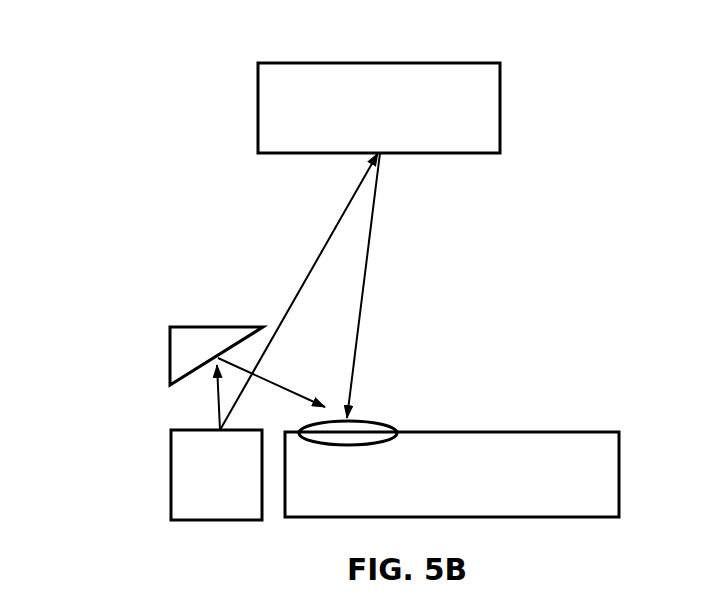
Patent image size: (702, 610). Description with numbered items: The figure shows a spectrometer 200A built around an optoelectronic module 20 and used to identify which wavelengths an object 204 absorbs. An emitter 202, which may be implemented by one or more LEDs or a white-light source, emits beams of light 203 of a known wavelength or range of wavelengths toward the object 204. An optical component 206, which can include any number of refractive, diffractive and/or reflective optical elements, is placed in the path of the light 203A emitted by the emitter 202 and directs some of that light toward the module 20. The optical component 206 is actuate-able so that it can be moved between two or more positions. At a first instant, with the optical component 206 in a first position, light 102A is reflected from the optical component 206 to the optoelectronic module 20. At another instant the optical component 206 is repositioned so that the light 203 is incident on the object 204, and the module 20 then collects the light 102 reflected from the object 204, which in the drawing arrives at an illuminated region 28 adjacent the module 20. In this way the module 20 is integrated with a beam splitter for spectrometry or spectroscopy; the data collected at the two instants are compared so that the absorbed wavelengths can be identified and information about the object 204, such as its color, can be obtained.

The spectrometer 200A is at (572, 199).
The object 204 is at (500, 110).
The optical component 206 is at (190, 335).
The emitter 202 is at (210, 510).
The optoelectronic module 20 is at (528, 452).
The measurement spot 28 is at (370, 418).
The beams of light 203 is at (297, 292).
The light emitted by the emitter 203A is at (218, 404).
The light reflected from the object 102 is at (368, 277).
The light reflected from the optical component 102A is at (275, 380).